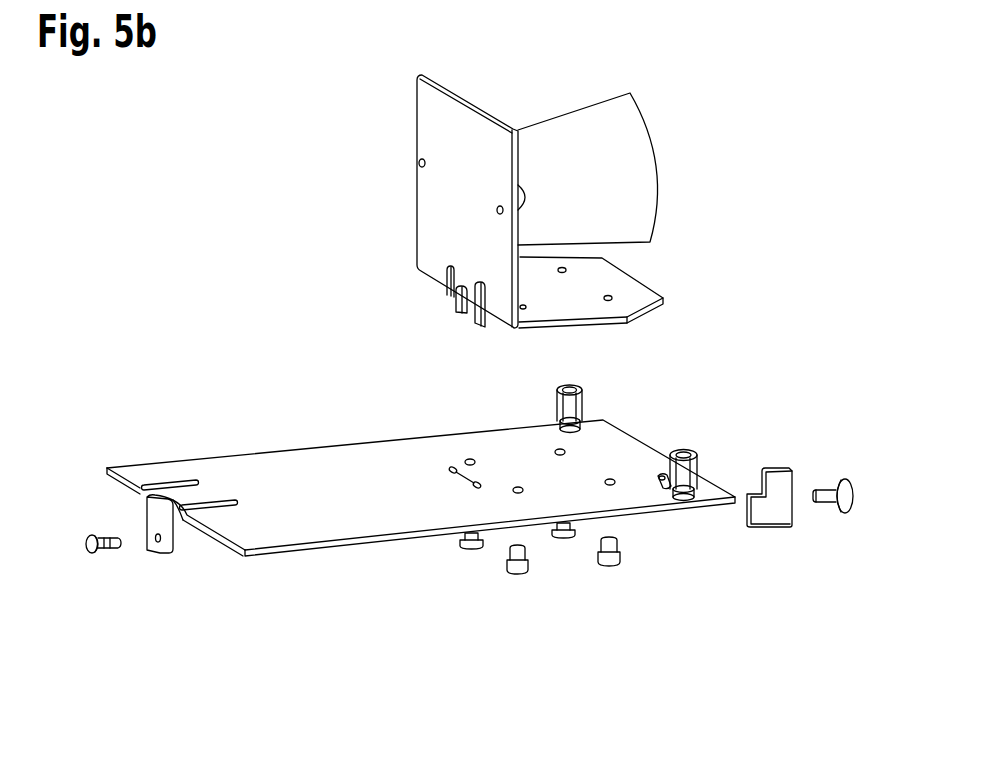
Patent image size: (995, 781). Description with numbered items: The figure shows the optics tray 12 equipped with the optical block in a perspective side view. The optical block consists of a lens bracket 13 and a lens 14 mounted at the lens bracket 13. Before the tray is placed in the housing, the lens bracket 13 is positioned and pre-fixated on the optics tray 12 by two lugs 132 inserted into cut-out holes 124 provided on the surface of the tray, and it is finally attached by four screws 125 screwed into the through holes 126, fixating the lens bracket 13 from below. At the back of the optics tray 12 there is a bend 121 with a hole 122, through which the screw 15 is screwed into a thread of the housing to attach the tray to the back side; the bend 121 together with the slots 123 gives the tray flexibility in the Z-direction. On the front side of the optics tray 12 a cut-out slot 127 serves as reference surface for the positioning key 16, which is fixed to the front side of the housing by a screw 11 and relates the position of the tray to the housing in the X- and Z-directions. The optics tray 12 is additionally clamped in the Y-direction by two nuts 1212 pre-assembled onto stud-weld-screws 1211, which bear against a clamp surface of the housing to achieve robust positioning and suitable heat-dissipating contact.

The screw 11 is at (850, 514).
The optics tray 12 is at (346, 525).
The lens bracket 13 is at (435, 120).
The lens 14 is at (643, 168).
The screw 15 is at (104, 553).
The positioning key 16 is at (772, 514).
The bend 121 is at (153, 518).
The hole 122 is at (160, 546).
The slots 123 is at (220, 497).
The cut-out holes 124 is at (474, 484).
The screws 125 is at (474, 549).
The through holes 126 is at (514, 488).
The cut-out slot 127 is at (662, 488).
The lugs 132 is at (450, 305).
The stud-weld-screws 1211 is at (580, 428).
The nuts 1212 is at (582, 398).